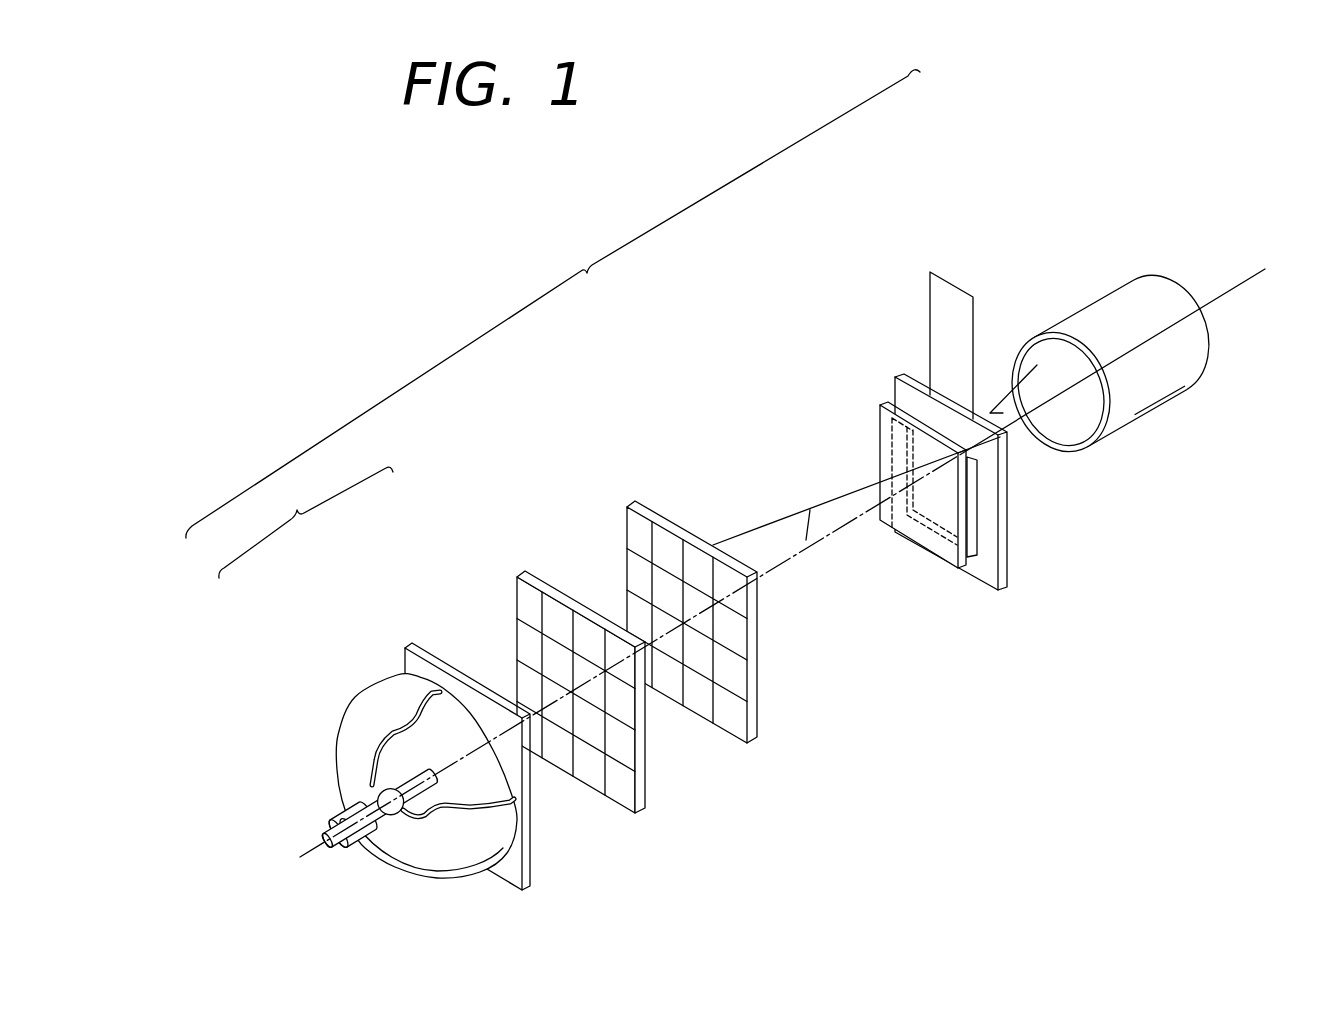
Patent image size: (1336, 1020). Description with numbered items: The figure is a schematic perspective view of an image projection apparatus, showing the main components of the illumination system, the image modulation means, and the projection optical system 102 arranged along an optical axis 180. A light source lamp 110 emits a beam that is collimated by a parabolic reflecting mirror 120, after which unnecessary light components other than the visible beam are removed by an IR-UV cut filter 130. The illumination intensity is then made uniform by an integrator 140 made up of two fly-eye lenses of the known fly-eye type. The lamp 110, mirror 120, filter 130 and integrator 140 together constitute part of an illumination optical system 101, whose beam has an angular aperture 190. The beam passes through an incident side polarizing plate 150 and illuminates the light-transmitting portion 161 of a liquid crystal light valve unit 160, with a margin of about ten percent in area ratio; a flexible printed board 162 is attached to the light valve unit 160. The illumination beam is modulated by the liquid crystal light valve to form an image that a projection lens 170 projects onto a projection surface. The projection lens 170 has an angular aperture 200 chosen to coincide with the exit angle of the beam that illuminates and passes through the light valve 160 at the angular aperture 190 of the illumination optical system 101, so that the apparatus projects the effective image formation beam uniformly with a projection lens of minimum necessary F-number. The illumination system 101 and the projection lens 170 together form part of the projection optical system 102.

The illumination optical system 101 is at (306, 522).
The projection optical system 102 is at (553, 304).
The light source lamp 110 is at (413, 773).
The parabolic reflecting mirror 120 is at (493, 837).
The IR-UV cut filter 130 is at (405, 648).
The integrator 140 is at (623, 517).
The incident side polarizing plate 150 is at (915, 537).
The liquid crystal light valve unit 160 is at (980, 572).
The light-transmitting portion 161 is at (970, 527).
The flexible printed board 162 is at (930, 328).
The projection lens 170 is at (1090, 455).
The optical axis 180 is at (1218, 293).
The angular aperture of the illumination optical system 190 is at (807, 525).
The angular aperture of the projection optical system 200 is at (1003, 417).